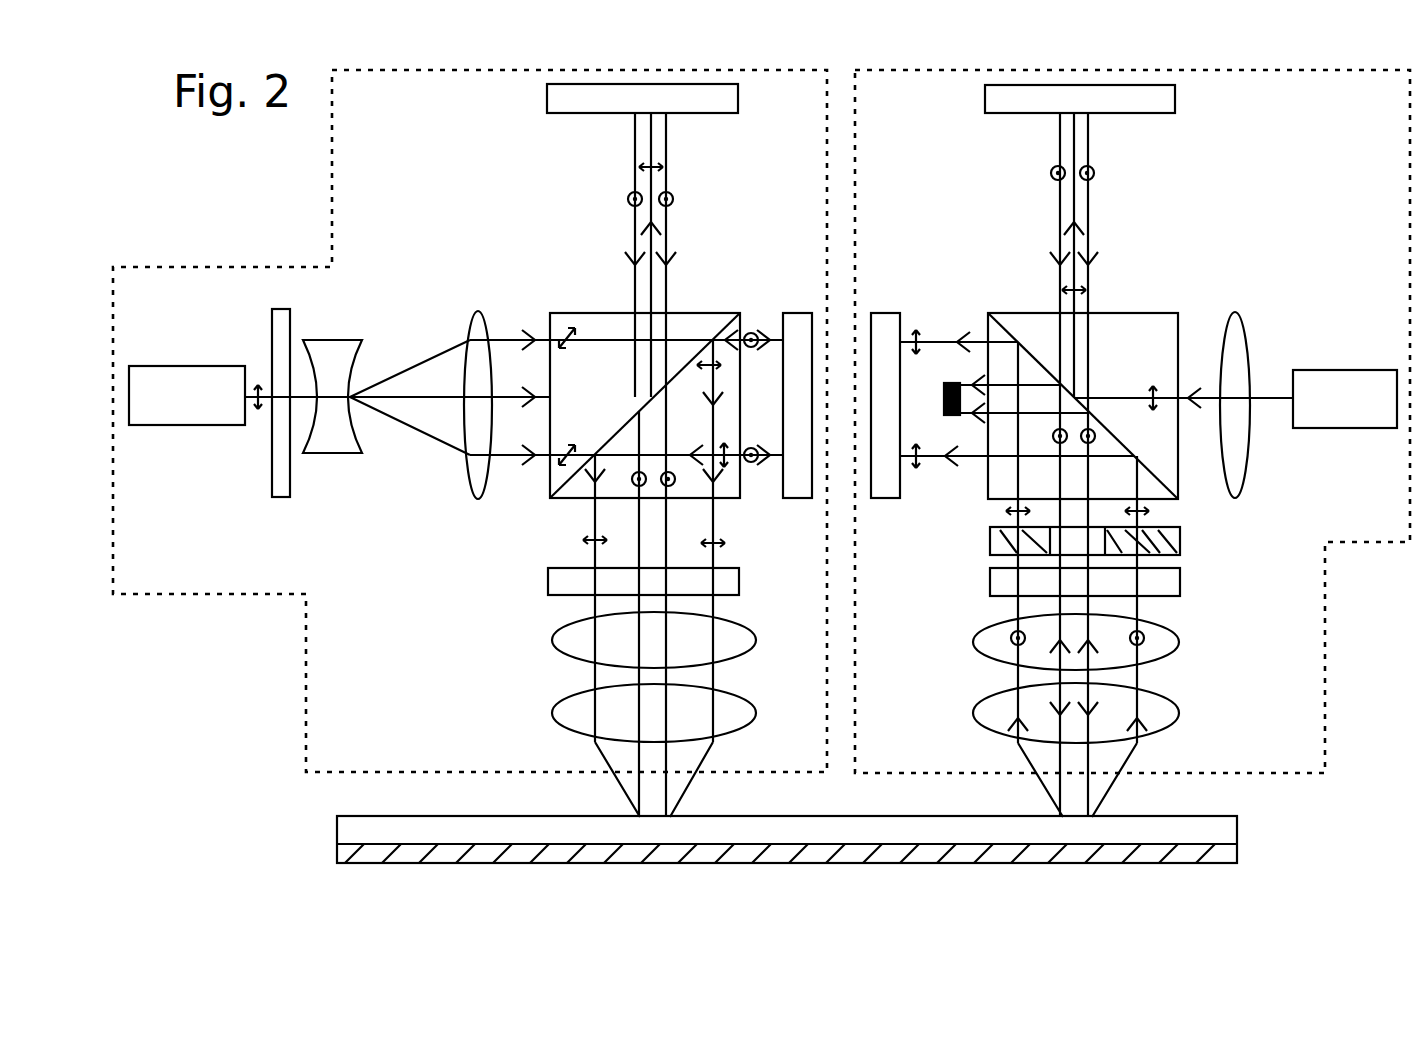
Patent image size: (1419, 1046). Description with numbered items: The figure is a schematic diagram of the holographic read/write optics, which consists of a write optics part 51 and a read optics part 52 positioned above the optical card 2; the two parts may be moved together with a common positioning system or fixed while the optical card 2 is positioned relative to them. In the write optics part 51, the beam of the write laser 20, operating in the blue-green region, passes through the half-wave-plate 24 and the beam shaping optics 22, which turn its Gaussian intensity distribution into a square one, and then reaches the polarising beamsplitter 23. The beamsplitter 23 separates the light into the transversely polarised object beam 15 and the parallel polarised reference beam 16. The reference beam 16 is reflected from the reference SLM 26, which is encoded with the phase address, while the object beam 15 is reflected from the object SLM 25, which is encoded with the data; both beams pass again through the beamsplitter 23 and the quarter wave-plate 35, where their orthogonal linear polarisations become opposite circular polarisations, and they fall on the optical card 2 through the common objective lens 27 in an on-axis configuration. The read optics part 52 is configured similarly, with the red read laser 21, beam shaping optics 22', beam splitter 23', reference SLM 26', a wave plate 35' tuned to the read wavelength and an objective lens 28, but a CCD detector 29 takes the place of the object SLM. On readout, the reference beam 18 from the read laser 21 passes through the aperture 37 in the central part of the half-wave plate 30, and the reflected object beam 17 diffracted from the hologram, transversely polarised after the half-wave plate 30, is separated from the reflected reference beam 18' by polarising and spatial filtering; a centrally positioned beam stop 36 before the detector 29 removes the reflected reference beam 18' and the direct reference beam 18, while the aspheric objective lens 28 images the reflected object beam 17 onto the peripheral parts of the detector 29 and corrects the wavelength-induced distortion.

The optical card 2 is at (350, 830).
The object beam 15 is at (735, 462).
The reference beam 16 is at (668, 176).
The reflected object beam 17 is at (1110, 797).
The reference beam 18 is at (1201, 737).
The reflected reference beam 18' is at (1020, 302).
The write laser 20 is at (187, 395).
The read laser 21 is at (1345, 399).
The beam shaping optics 22 is at (397, 374).
The beam shaping optics 22' is at (1264, 375).
The polarising beamsplitter 23 is at (630, 358).
The beam splitter 23' is at (1105, 341).
The half-wave-plate 24 is at (290, 470).
The object SLM 25 is at (797, 322).
The reference SLM 26 is at (587, 104).
The reference SLM 26' is at (1037, 109).
The objective lens 27 is at (718, 705).
The objective lens 28 is at (1167, 642).
The CCD detector 29 is at (890, 312).
The half-wave plate 30 is at (995, 545).
The quarter wave-plate 35 is at (600, 593).
The wave plate 35' is at (1036, 626).
The beam stop 36 is at (944, 397).
The aperture 37 is at (1100, 548).
The write optics part 51 is at (296, 265).
The read optics part 52 is at (1325, 615).